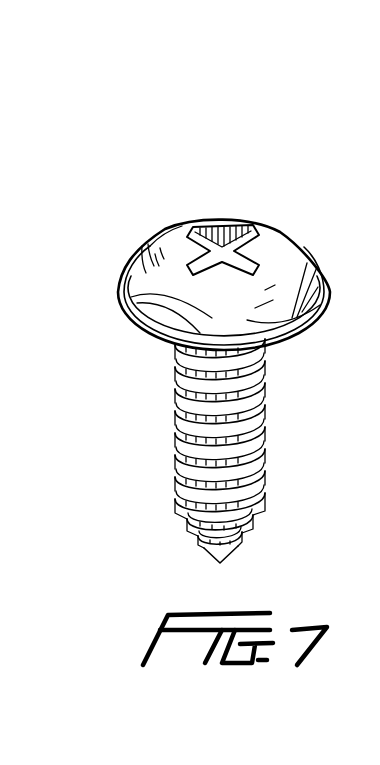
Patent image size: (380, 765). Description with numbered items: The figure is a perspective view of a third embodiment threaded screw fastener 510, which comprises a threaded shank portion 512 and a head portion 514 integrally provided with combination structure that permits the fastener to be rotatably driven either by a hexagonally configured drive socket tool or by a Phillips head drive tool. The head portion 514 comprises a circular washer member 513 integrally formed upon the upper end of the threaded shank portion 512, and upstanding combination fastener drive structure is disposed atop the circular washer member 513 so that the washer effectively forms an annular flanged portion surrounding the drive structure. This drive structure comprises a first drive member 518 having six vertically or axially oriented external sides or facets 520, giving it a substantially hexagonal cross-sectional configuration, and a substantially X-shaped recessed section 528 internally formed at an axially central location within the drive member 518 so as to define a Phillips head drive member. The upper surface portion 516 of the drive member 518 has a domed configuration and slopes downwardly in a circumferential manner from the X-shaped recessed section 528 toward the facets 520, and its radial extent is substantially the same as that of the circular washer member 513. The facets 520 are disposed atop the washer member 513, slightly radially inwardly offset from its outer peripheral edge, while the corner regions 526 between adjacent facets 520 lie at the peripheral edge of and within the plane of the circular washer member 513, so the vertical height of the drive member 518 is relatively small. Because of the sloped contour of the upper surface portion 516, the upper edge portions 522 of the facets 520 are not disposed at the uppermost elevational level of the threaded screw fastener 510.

The threaded screw fastener 510 is at (293, 133).
The threaded shank portion 512 is at (265, 488).
The circular washer member 513 is at (320, 292).
The head portion 514 is at (123, 283).
The upper surface portion 516 is at (200, 310).
The first drive member 518 is at (130, 310).
The external sides or facets 520 is at (253, 321).
The upper edge portions 522 is at (293, 321).
The corner regions 526 is at (180, 412).
The X-shaped recessed section 528 is at (221, 243).